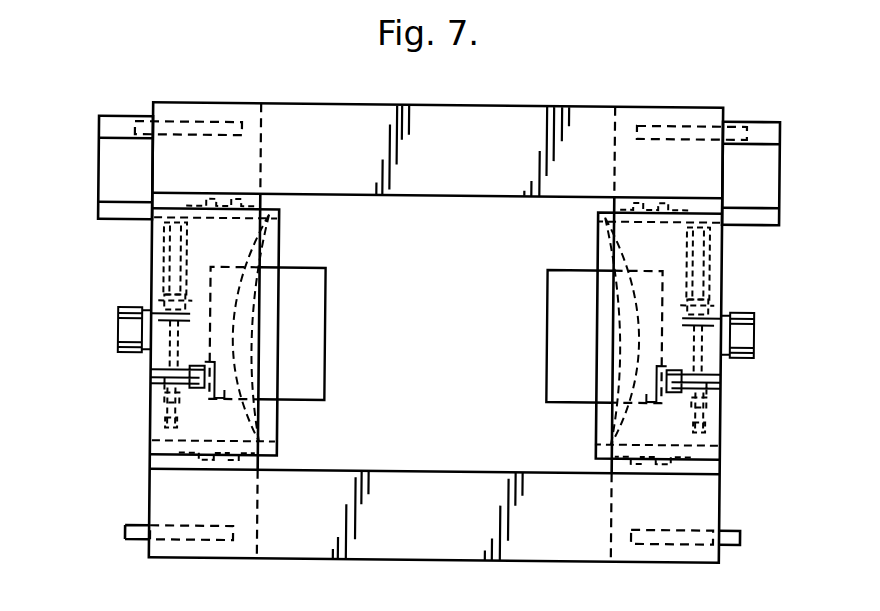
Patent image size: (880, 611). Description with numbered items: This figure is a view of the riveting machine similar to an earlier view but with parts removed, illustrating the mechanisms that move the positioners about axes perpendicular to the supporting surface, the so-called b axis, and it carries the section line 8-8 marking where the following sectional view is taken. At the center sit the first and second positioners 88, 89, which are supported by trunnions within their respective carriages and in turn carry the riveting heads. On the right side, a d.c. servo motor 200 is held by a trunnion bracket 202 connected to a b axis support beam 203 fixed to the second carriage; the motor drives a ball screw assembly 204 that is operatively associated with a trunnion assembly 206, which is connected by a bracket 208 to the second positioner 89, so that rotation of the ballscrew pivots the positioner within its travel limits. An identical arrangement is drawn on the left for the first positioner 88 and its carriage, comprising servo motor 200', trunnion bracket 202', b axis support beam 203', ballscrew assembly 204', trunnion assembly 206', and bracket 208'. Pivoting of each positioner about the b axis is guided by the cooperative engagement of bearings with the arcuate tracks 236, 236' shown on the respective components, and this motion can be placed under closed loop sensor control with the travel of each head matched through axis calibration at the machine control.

The section line 8- 8 is at (817, 112).
The first positioner 88 is at (318, 288).
The second positioner 89 is at (556, 288).
The servo motor 200 is at (746, 263).
The servo motor 200' is at (110, 257).
The trunnion bracket 202 is at (743, 303).
The trunnion bracket 202' is at (112, 295).
The b axis support beam 203 is at (747, 289).
The b axis support beam 203' is at (109, 278).
The ball screw assembly 204 is at (763, 345).
The ballscrew assembly 204' is at (92, 341).
The trunnion assembly 206 is at (738, 391).
The trunnion assembly 206' is at (115, 390).
The bracket 208 is at (748, 412).
The bracket 208' is at (105, 410).
The arcuate track 236 is at (573, 337).
The arcuate track 236' is at (299, 334).